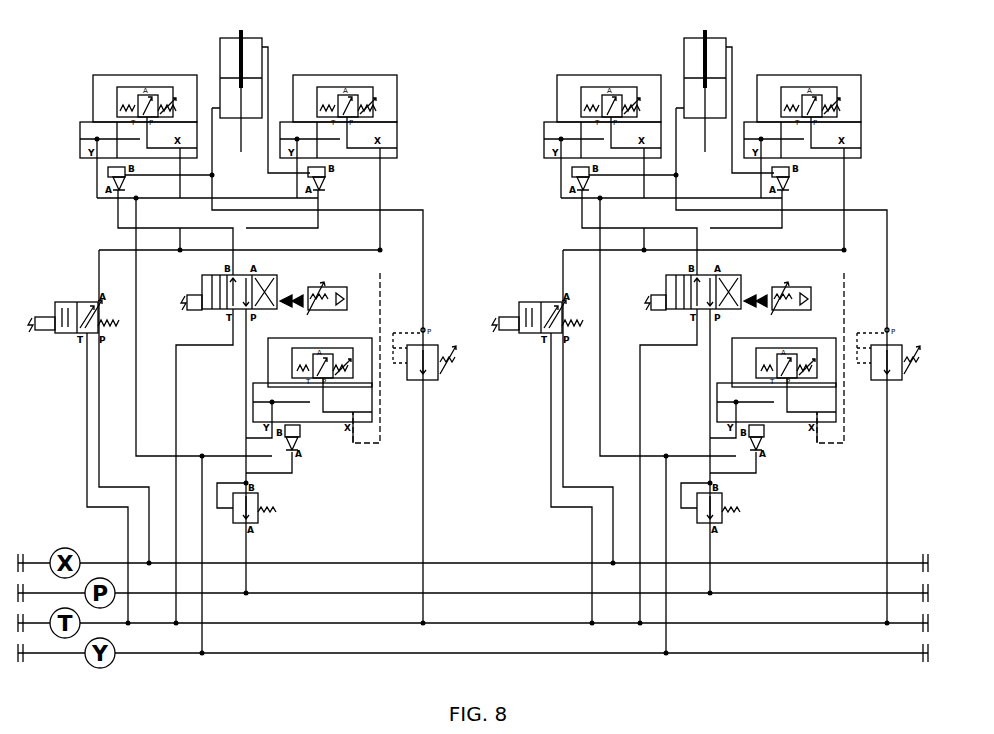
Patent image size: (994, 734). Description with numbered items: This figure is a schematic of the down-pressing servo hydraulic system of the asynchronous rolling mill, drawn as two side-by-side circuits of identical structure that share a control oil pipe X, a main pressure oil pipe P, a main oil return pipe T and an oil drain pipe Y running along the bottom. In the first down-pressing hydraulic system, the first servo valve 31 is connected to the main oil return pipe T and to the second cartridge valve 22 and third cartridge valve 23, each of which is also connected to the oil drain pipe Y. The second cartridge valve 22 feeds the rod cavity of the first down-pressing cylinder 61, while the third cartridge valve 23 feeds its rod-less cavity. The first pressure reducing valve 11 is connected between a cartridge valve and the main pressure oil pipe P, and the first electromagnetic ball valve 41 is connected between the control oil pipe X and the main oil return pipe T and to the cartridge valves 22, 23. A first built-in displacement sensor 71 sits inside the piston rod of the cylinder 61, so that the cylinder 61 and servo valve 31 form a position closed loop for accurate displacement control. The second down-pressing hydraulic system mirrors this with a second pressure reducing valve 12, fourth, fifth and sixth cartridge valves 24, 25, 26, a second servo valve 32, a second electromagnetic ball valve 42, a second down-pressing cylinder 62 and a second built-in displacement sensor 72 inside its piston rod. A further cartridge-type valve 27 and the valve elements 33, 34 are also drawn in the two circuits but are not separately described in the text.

The first pressure reducing valve 11 is at (263, 509).
The second pressure reducing valve 12 is at (727, 509).
The second cartridge valve 22 is at (129, 136).
The third cartridge valve 23 is at (338, 136).
The fourth cartridge valve 24 is at (312, 398).
The fifth cartridge valve 25 is at (593, 136).
The sixth cartridge valve 26 is at (802, 136).
The pilot-operated logic valve 27 is at (776, 398).
The first servo valve 31 is at (271, 292).
The second servo valve 32 is at (735, 292).
The pressure reducing valve 33 is at (422, 365).
The pressure reducing valve 34 is at (886, 365).
The first electromagnetic ball valve 41 is at (70, 317).
The second electromagnetic ball valve 42 is at (534, 317).
The first down-pressing cylinder 61 is at (213, 59).
The second down-pressing cylinder 62 is at (677, 59).
The first built-in displacement sensor 71 is at (248, 81).
The second built-in displacement sensor 72 is at (712, 81).